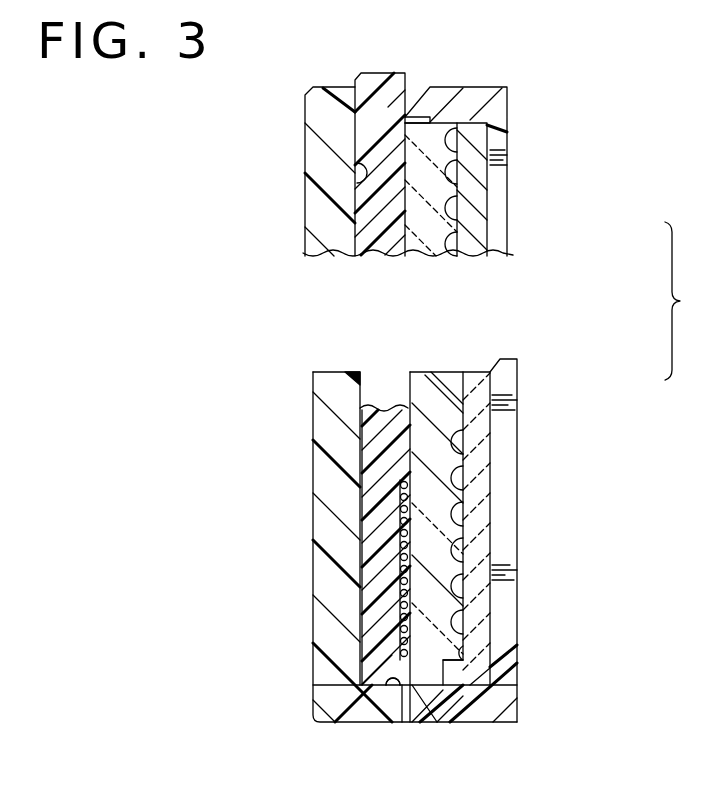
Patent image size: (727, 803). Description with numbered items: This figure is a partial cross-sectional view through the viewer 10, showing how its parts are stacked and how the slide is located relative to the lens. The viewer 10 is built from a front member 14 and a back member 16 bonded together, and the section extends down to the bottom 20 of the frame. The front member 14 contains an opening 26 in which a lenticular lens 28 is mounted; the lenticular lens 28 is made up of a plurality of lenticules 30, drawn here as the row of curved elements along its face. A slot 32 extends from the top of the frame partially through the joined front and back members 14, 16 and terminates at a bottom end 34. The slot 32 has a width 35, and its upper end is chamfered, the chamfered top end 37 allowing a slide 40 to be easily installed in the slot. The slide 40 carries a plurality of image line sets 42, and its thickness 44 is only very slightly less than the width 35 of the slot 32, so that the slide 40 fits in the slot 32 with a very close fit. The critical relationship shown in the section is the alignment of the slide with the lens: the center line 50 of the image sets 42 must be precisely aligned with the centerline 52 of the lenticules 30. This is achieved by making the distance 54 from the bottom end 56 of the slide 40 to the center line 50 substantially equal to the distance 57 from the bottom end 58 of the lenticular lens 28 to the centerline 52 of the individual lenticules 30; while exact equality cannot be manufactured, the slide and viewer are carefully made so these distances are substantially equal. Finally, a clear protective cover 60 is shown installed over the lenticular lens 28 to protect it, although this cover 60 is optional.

The viewer 10 is at (197, 448).
The front member 14 is at (503, 723).
The back member 16 is at (310, 705).
The bottom 20 is at (309, 87).
The opening 26 is at (508, 162).
The lenticular lens 28 is at (490, 417).
The lenticules 30 is at (437, 220).
The slot 32 is at (350, 166).
The bottom end of the slot 34 is at (407, 723).
The width of the slot 35 is at (440, 33).
The chamfered top end 37 is at (405, 115).
The slide 40 is at (360, 497).
The image line sets 42 is at (397, 645).
The thickness of the slide 44 is at (440, 325).
The center line of the image sets 50 is at (313, 640).
The centerline of the lenticules 52 is at (517, 640).
The distance from the bottom end of the slide 54 is at (313, 685).
The bottom end of the slide 56 is at (335, 700).
The distance from the bottom end of the lenticular lens 57 is at (517, 684).
The bottom end of the lenticular lens 58 is at (455, 723).
The clear protective cover 60 is at (490, 472).